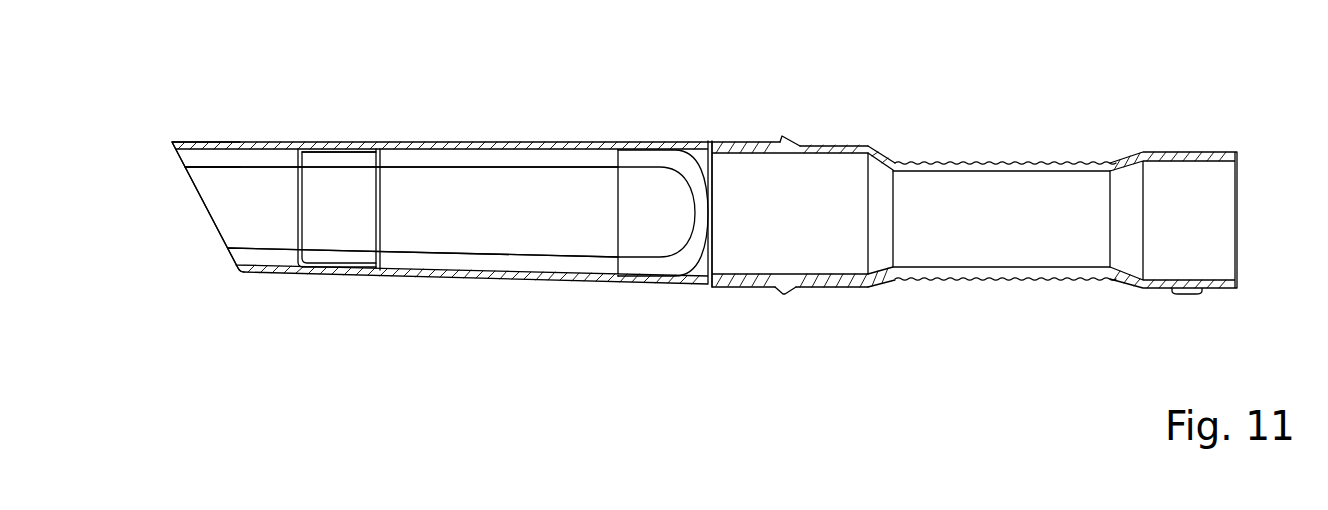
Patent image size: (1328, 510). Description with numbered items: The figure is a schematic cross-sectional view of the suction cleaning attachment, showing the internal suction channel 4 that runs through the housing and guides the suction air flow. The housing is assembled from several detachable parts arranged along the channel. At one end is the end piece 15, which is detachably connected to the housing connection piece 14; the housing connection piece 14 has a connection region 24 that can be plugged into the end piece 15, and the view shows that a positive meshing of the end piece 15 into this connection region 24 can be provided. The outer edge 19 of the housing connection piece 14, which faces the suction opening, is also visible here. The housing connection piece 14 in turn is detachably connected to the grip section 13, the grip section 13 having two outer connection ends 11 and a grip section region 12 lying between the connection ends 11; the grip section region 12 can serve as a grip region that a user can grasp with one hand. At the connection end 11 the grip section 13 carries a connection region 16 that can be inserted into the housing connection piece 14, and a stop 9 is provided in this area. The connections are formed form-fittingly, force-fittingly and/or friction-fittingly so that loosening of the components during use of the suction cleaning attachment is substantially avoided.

The suction channel 4 is at (320, 207).
The stop 9 is at (782, 137).
The connection end 11 is at (824, 145).
The grip section region 12 is at (983, 163).
The grip section 13 is at (851, 316).
The housing connection piece 14 is at (451, 124).
The end piece 15 is at (226, 142).
The connection region of grip section 16 is at (738, 141).
The outer edge of housing connection piece 19 is at (300, 186).
The connection region of housing connection piece 24 is at (340, 140).